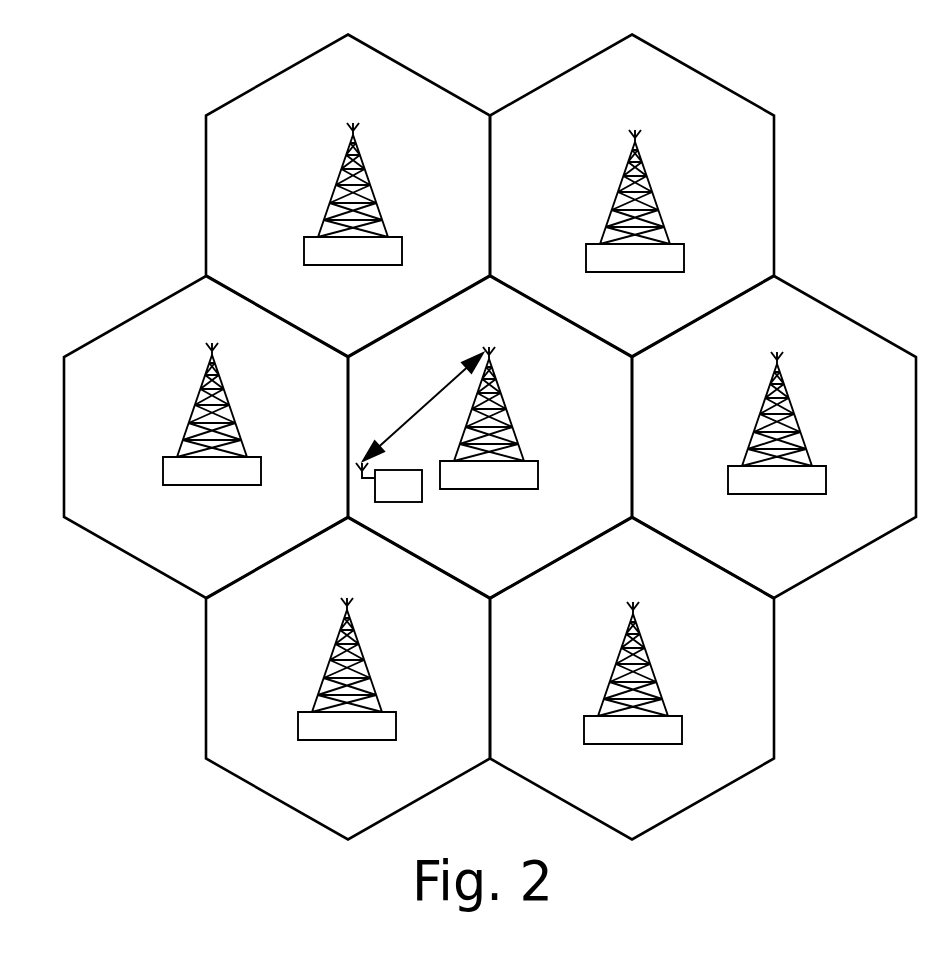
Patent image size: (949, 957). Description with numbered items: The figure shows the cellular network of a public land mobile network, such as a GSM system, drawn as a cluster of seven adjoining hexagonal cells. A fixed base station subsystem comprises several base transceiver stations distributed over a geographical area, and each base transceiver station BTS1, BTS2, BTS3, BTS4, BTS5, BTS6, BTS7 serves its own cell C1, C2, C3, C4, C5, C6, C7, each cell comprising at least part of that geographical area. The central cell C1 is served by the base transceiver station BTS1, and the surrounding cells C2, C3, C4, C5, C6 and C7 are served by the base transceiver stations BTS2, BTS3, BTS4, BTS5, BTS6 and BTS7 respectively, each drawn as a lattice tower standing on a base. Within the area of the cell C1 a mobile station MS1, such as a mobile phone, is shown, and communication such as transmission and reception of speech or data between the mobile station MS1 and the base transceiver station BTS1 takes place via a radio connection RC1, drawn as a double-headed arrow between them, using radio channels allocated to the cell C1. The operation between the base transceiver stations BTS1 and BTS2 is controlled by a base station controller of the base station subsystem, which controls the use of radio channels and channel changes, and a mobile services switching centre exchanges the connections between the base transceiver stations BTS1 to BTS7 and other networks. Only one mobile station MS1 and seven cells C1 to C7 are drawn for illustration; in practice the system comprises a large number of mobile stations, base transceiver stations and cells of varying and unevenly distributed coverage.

The cell C1 is at (490, 437).
The cell C2 is at (632, 196).
The cell C3 is at (774, 437).
The cell C4 is at (632, 679).
The cell C5 is at (348, 679).
The cell C6 is at (206, 437).
The cell C7 is at (348, 196).
The base transceiver station BTS1 is at (494, 436).
The base transceiver station BTS2 is at (641, 220).
The base transceiver station BTS3 is at (785, 441).
The base transceiver station BTS4 is at (640, 691).
The base transceiver station BTS5 is at (353, 689).
The base transceiver station BTS6 is at (219, 433).
The base transceiver station BTS7 is at (358, 215).
The mobile station MS1 is at (405, 504).
The radio connection RC1 is at (427, 403).